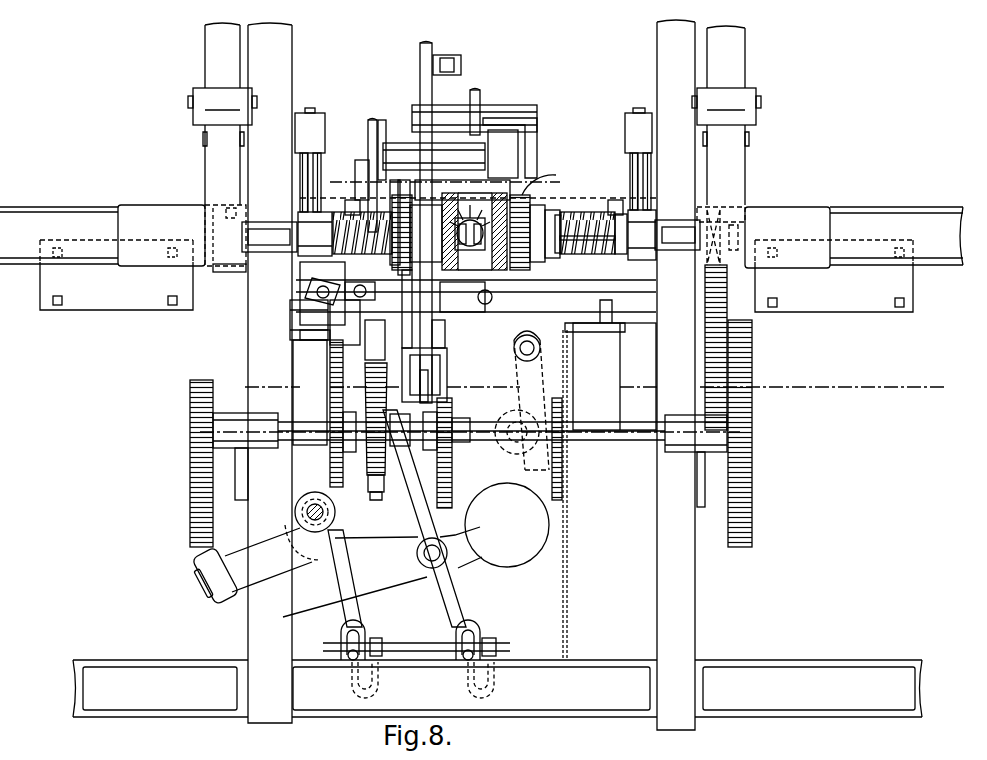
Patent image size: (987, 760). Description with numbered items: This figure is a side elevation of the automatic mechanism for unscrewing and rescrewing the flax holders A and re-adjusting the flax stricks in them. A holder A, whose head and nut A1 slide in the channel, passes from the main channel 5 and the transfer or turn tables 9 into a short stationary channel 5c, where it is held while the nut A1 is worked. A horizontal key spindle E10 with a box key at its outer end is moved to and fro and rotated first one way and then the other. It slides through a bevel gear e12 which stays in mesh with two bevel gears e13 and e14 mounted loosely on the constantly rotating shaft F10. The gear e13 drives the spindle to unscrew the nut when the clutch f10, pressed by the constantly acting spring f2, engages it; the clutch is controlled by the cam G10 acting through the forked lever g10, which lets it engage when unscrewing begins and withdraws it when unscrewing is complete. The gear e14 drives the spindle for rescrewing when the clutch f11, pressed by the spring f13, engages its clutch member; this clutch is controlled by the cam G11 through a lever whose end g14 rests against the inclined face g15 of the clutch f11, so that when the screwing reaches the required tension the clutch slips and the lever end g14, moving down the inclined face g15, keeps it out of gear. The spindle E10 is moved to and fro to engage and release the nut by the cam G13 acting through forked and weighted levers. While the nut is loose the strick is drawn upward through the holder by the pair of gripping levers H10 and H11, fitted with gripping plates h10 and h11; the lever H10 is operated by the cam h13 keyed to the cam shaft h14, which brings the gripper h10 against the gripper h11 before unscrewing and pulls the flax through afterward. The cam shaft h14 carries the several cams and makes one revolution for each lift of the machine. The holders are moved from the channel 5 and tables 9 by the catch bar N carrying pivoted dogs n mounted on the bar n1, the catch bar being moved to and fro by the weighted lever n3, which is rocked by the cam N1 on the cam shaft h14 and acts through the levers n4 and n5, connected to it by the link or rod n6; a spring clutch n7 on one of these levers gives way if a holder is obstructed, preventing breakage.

The side bar 5c is at (123, 223).
The main channel 5 is at (830, 237).
The flax holder A is at (476, 276).
The nut A1 is at (242, 272).
The constantly rotating shaft F10 is at (650, 225).
The spring f13 is at (312, 280).
The clutch f11 is at (402, 195).
The inclined face g15 is at (363, 207).
The lever end g14 is at (403, 205).
The transfer or turn tables 9 is at (478, 193).
The gripping lever H11 is at (477, 140).
The gripping plate h11 is at (492, 170).
The gripping lever H10 is at (523, 148).
The gripping plate h10 is at (545, 175).
The bevel gear e13 is at (515, 194).
The spring f2 is at (625, 118).
The clutch f10 is at (560, 222).
The bevel gear e14 is at (468, 240).
The bevel gear e12 is at (481, 242).
The dogs or catches n is at (377, 293).
The catch bar N is at (411, 313).
The bar n1 is at (511, 347).
The key spindle E10 is at (473, 245).
The forked lever g10 is at (538, 331).
The cam G11 is at (425, 416).
The cam shaft h14 is at (493, 428).
The gear N1 is at (220, 441).
The cam h13 is at (326, 471).
The weighted lever n3 is at (377, 408).
The cam G13 is at (416, 542).
The cam G10 is at (537, 440).
The spring clutch n7 is at (337, 512).
The lever n4 is at (250, 567).
The lever n5 is at (345, 578).
The link or rod n6 is at (416, 656).